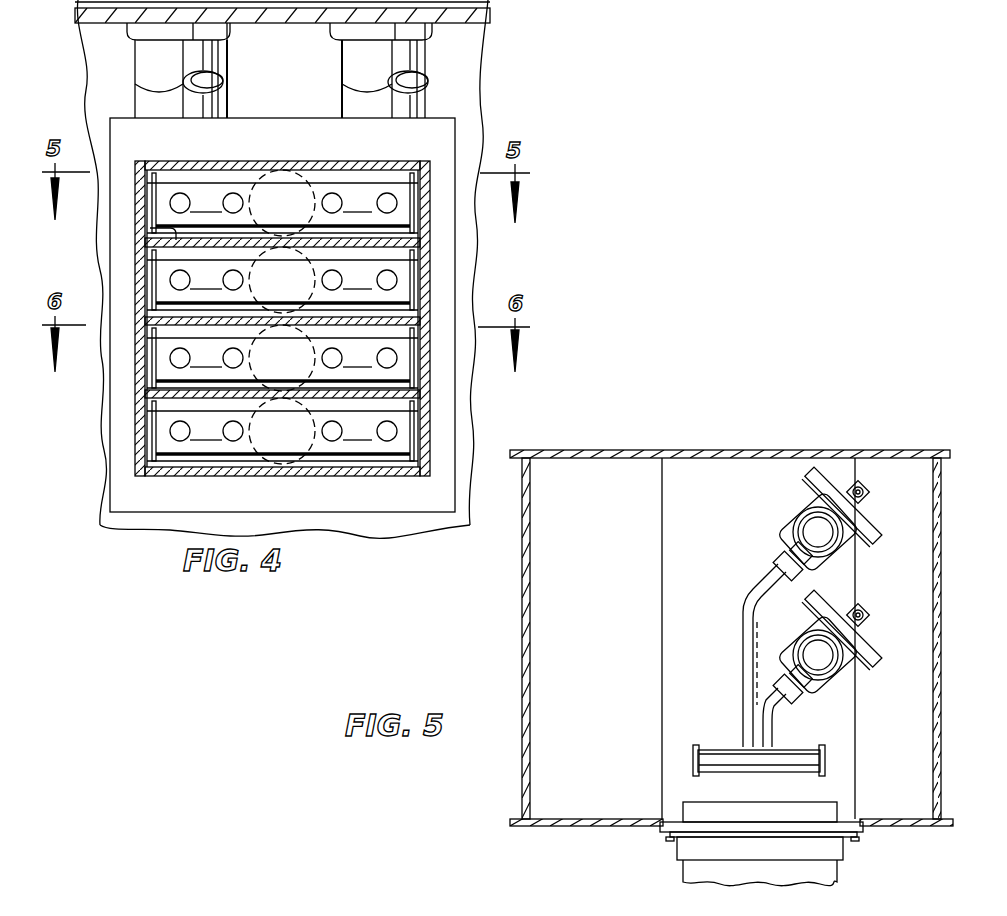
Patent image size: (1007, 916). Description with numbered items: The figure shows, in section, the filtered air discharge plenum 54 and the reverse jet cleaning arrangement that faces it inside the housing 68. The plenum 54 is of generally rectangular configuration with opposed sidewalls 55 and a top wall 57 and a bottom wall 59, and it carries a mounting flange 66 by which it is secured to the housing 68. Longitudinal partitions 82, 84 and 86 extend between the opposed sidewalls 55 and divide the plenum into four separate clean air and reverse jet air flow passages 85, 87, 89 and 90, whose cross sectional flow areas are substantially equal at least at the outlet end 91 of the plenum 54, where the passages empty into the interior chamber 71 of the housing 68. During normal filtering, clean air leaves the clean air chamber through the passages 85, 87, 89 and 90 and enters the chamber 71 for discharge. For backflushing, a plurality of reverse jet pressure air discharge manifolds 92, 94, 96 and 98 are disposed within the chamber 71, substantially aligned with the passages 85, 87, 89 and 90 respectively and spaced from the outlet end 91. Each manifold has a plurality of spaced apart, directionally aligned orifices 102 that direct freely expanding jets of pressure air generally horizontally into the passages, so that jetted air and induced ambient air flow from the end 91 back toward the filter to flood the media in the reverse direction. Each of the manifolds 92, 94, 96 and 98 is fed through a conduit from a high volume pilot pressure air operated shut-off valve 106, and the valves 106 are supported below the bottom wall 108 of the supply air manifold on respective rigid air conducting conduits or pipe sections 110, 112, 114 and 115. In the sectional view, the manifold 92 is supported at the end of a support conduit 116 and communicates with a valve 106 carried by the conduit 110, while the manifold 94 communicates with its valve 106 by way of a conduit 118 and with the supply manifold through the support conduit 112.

In FIG. 5, the filtered air discharge plenum 54 is at (840, 873).
In FIG. 4, the opposed sidewalls 55 is at (147, 438).
In FIG. 4, the top wall 57 is at (256, 169).
In FIG. 4, the bottom wall 59 is at (247, 472).
In FIG. 4, the mounting flange 66 is at (348, 512).
In FIG. 5, the mounting flange 66 is at (668, 840).
In FIG. 5, the housing 68 is at (738, 450).
In FIG. 5, the interior chamber 71 is at (703, 652).
In FIG. 4, the longitudinal partition 82 is at (154, 230).
In FIG. 4, the longitudinal partition 84 is at (151, 344).
In FIG. 4, the clean air and reverse jet air flow passage 85 is at (292, 211).
In FIG. 4, the longitudinal partition 86 is at (152, 411).
In FIG. 4, the clean air and reverse jet air flow passage 87 is at (292, 288).
In FIG. 4, the clean air and reverse jet air flow passage 89 is at (292, 366).
In FIG. 4, the clean air and reverse jet air flow passage 90 is at (292, 439).
In FIG. 5, the outlet end 91 is at (697, 800).
In FIG. 4, the reverse jet pressure air discharge manifold 92 is at (387, 199).
In FIG. 5, the reverse jet pressure air discharge manifold 92 is at (725, 747).
In FIG. 4, the reverse jet pressure air discharge manifold 94 is at (413, 255).
In FIG. 5, the reverse jet pressure air discharge manifold 94 is at (802, 780).
In FIG. 4, the reverse jet pressure air discharge manifold 96 is at (435, 304).
In FIG. 4, the reverse jet pressure air discharge manifold 98 is at (172, 472).
In FIG. 4, the orifices 102 is at (231, 198).
In FIG. 5, the shut-off valve 106 is at (866, 512).
In FIG. 4, the bottom wall 108 is at (473, 46).
In FIG. 4, the conduit 110 is at (459, 108).
In FIG. 4, the conduit 112 is at (457, 84).
In FIG. 4, the conduit 114 is at (227, 101).
In FIG. 4, the conduit 115 is at (227, 65).
In FIG. 5, the support conduit 116 is at (747, 583).
In FIG. 5, the conduit 118 is at (772, 721).